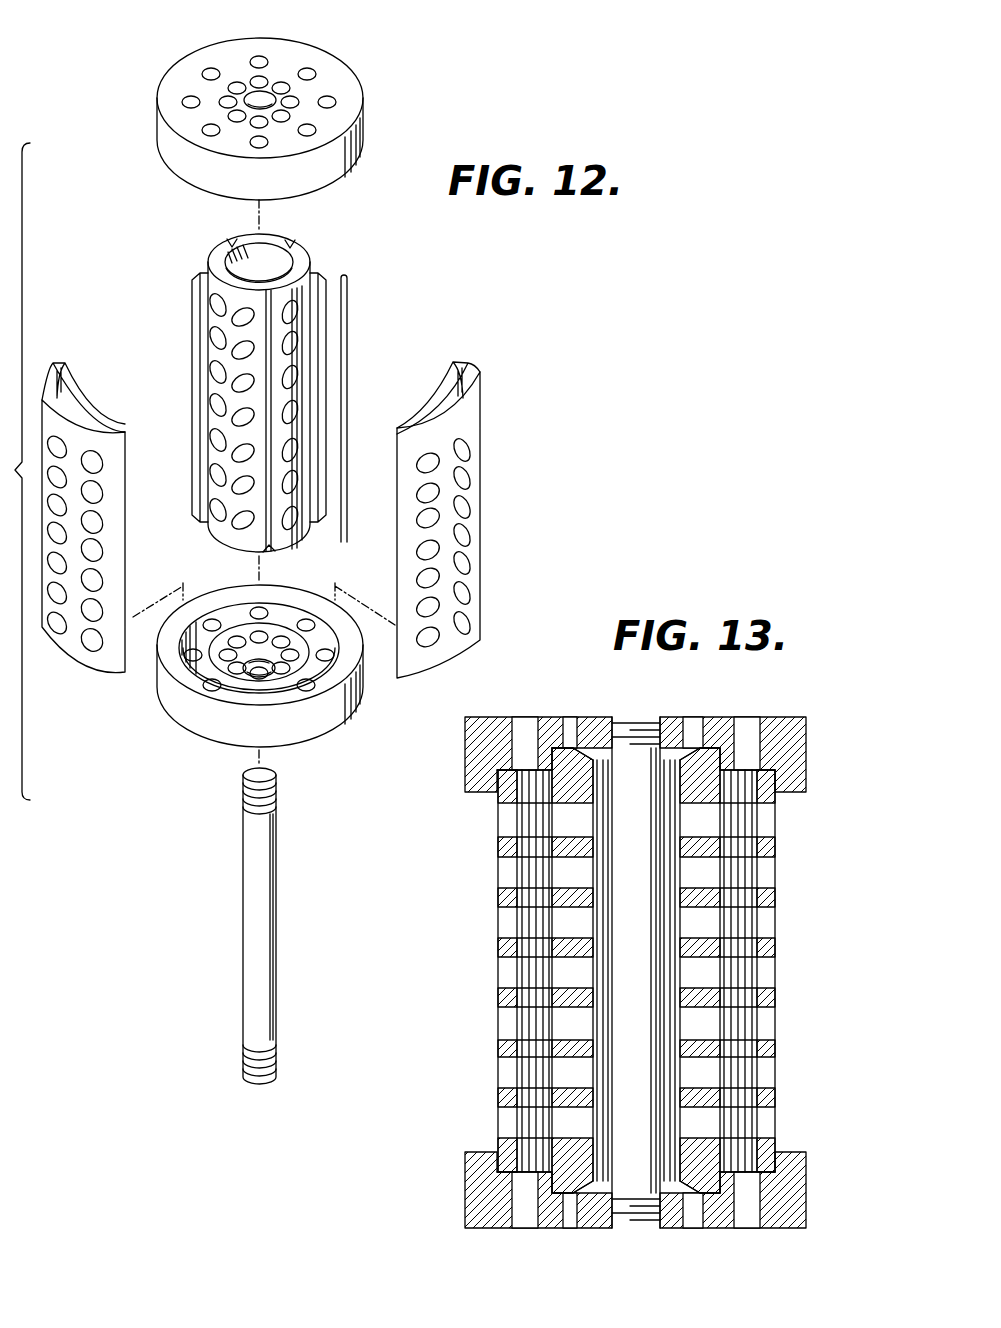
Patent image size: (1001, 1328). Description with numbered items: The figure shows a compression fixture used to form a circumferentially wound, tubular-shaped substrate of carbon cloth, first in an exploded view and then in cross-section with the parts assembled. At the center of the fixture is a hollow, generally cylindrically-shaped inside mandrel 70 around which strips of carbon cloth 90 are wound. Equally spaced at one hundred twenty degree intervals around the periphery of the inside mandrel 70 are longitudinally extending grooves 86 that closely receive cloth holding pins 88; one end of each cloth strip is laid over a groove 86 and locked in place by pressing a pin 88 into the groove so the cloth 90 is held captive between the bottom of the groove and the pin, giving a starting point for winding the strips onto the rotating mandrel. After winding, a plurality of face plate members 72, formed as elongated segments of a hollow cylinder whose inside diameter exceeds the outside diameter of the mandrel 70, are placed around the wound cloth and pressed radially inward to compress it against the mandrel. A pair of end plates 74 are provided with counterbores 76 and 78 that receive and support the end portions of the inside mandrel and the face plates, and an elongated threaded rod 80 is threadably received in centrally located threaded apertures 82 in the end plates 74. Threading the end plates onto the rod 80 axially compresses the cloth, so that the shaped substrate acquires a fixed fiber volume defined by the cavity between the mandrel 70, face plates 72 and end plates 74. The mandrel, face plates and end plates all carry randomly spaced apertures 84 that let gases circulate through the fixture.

In FIG. 12, the inside mandrel 70 is at (322, 258).
In FIG. 13, the inside mandrel 70 is at (566, 790).
In FIG. 12, the face plate members 72 is at (196, 324).
In FIG. 13, the face plate members 72 is at (499, 901).
In FIG. 12, the end plates 74 is at (368, 123).
In FIG. 13, the end plates 74 is at (791, 717).
In FIG. 12, the counterbore 76 is at (214, 661).
In FIG. 13, the counterbore 76 is at (561, 752).
In FIG. 12, the counterbore 78 is at (183, 645).
In FIG. 13, the counterbore 78 is at (503, 780).
In FIG. 12, the threaded rod 80 is at (272, 920).
In FIG. 13, the threaded rod 80 is at (656, 715).
In FIG. 12, the threaded apertures 82 is at (272, 96).
In FIG. 13, the threaded apertures 82 is at (617, 722).
In FIG. 12, the apertures 84 is at (332, 102).
In FIG. 13, the apertures 84 is at (694, 726).
In FIG. 12, the grooves 86 is at (226, 249).
In FIG. 12, the cloth holding pins 88 is at (349, 360).
In FIG. 13, the cloth 90 is at (761, 1026).